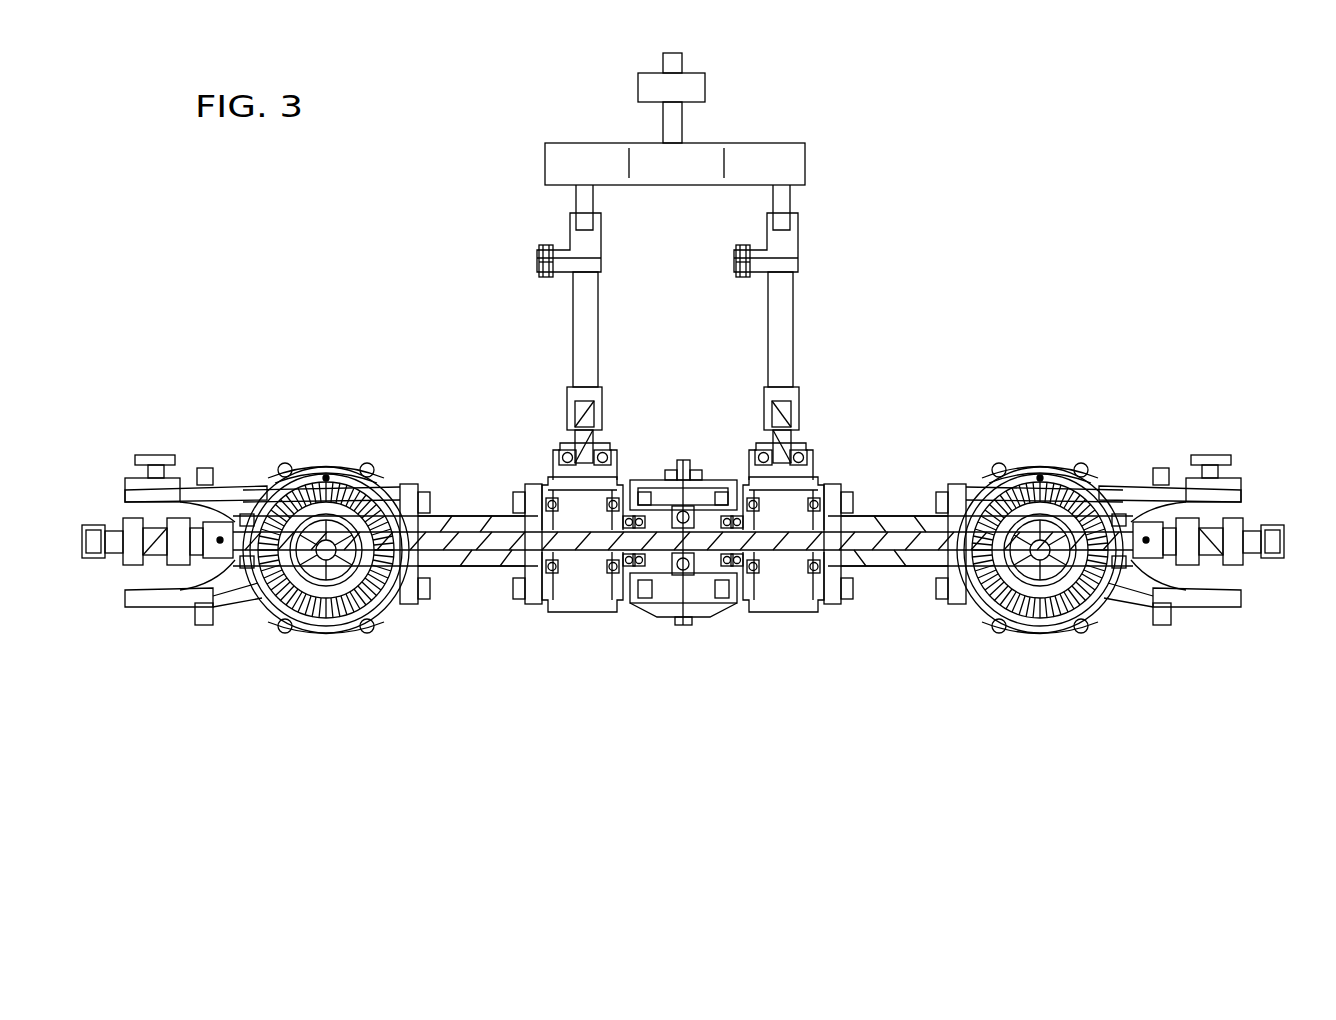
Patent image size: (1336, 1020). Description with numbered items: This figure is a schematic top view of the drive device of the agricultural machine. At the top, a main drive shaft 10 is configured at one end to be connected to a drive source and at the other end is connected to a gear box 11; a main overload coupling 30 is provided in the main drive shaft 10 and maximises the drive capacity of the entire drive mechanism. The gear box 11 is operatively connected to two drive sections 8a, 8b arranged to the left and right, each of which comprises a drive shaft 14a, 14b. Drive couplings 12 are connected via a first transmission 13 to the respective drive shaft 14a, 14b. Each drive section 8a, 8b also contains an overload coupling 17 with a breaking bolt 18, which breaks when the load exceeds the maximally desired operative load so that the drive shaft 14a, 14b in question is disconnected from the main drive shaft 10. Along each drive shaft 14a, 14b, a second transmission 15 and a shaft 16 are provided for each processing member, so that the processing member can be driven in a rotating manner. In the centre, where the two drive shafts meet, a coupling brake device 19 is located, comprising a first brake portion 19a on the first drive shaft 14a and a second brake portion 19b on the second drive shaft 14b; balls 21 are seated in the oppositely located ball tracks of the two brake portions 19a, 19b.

The main overload coupling 30 is at (653, 83).
The main drive shaft 10 is at (669, 124).
The gear box 11 is at (565, 162).
The overload coupling 17 is at (582, 239).
The breaking bolt 18 is at (547, 265).
The drive coupling 12 is at (584, 339).
The first transmission 13 is at (566, 496).
The ball 21 is at (683, 517).
The coupling brake device 19 is at (683, 607).
The first brake portion 19a is at (672, 612).
The second brake portion 19b is at (713, 607).
The first drive shaft 14a is at (430, 538).
The second drive shaft 14b is at (936, 538).
The second transmission 15 is at (387, 485).
The shaft 16 is at (326, 553).
The drive section 8a is at (455, 425).
The drive section 8b is at (894, 428).